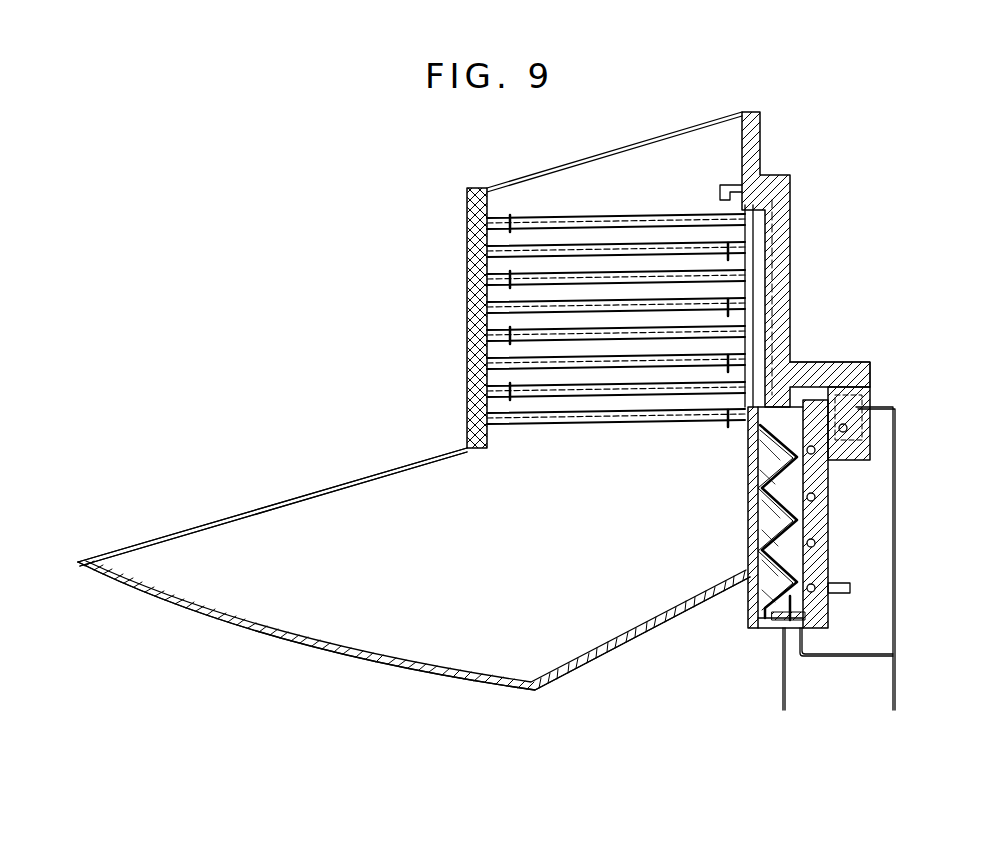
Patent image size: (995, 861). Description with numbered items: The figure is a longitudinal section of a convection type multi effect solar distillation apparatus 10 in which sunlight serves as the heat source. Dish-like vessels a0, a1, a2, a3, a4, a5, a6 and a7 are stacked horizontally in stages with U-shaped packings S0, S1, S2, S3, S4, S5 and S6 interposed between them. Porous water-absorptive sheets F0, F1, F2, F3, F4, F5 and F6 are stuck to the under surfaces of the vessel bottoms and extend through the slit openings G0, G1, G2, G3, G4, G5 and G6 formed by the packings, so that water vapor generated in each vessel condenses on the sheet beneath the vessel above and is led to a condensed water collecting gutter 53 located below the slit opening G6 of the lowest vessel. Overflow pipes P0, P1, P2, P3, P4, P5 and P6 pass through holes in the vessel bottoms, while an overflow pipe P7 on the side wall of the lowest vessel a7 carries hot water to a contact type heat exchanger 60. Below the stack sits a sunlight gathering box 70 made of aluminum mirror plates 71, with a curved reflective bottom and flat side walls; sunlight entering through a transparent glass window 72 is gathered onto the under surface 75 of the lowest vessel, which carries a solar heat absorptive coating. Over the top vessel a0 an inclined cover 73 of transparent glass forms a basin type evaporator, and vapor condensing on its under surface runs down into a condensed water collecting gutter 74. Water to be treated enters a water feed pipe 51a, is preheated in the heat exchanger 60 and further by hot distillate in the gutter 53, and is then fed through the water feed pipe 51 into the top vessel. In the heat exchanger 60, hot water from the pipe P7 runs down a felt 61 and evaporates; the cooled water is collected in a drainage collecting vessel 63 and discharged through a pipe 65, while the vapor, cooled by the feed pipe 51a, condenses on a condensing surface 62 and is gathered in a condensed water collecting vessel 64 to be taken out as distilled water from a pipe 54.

The gasket assembly 10 is at (872, 368).
The water feed pipe 51 is at (757, 195).
The water feed pipe 51a is at (850, 588).
The condensed water collecting gutter 53 is at (870, 445).
The pipe 54 is at (898, 668).
The contact type heat exchanger 60 is at (828, 488).
The felt 61 is at (792, 487).
The condensing surface 62 is at (793, 552).
The drainage collecting vessel 63 is at (760, 630).
The condensed water collecting vessel 64 is at (805, 614).
The pipe 65 is at (900, 640).
The sunlight gathering box 70 is at (540, 566).
The aluminum mirror plates 71 is at (375, 662).
The transparent glass window 72 is at (270, 510).
The inclined cover 73 is at (603, 151).
The condensed water collecting gutter 74 is at (498, 192).
The under surface 75 is at (607, 425).
The overflow pipe P0 is at (516, 228).
The overflow pipe P1 is at (722, 256).
The overflow pipe P2 is at (516, 284).
The overflow pipe P3 is at (722, 312).
The overflow pipe P4 is at (516, 340).
The overflow pipe P5 is at (722, 368).
The overflow pipe P6 is at (516, 396).
The overflow pipe P7 is at (722, 411).
The dish-like vessel a0 is at (487, 205).
The dish-like vessel a1 is at (487, 237).
The dish-like vessel a2 is at (487, 265).
The dish-like vessel a3 is at (487, 293).
The dish-like vessel a4 is at (487, 321).
The dish-like vessel a5 is at (487, 349).
The dish-like vessel a6 is at (487, 377).
The dish-like vessel a7 is at (487, 405).
The U-shaped packing S0 is at (470, 223).
The U-shaped packing S1 is at (470, 251).
The U-shaped packing S2 is at (470, 279).
The U-shaped packing S3 is at (470, 307).
The U-shaped packing S4 is at (470, 335).
The U-shaped packing S5 is at (470, 363).
The U-shaped packing S6 is at (470, 391).
The porous water-absorptive sheet F0 is at (757, 220).
The porous water-absorptive sheet F1 is at (757, 248).
The porous water-absorptive sheet F2 is at (757, 276).
The porous water-absorptive sheet F3 is at (757, 304).
The porous water-absorptive sheet F4 is at (757, 332).
The porous water-absorptive sheet F5 is at (757, 360).
The porous water-absorptive sheet F6 is at (872, 375).
The slit opening G0 is at (775, 233).
The slit opening G1 is at (775, 261).
The slit opening G2 is at (775, 289).
The slit opening G3 is at (775, 317).
The slit opening G4 is at (775, 345).
The slit opening G5 is at (775, 373).
The slit opening G6 is at (872, 398).